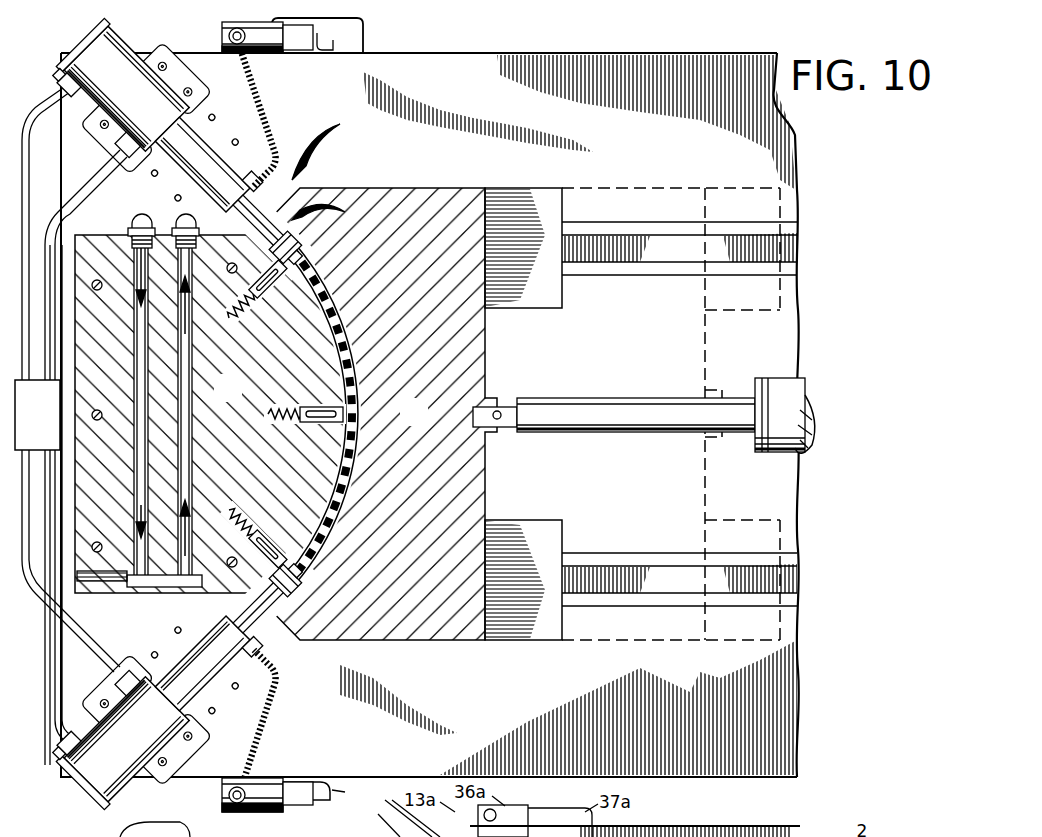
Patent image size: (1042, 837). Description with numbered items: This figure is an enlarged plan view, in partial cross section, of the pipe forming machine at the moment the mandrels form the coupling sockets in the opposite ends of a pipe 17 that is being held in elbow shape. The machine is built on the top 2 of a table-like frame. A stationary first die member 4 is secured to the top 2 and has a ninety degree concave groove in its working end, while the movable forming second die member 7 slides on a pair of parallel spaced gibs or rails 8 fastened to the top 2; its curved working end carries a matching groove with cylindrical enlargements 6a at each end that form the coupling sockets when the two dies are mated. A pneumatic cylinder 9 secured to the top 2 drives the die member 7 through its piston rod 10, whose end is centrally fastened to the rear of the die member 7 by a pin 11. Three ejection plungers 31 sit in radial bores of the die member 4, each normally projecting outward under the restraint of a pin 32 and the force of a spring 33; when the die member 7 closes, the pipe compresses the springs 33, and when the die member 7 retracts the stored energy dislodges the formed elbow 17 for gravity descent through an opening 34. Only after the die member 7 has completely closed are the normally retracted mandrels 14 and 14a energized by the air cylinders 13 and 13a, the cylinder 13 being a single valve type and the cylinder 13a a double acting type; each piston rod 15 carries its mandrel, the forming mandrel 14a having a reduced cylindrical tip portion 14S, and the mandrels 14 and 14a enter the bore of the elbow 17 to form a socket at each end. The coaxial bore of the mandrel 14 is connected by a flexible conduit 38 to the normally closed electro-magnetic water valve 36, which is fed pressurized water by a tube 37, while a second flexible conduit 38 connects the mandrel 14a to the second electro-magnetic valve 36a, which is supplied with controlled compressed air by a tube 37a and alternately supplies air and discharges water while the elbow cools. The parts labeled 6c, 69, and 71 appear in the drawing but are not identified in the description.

The top 2 is at (536, 114).
The stationary first die member 4 is at (218, 397).
The cylindrical enlargements 6a is at (258, 302).
The latch position indicator 6c is at (346, 213).
The movable forming second die member 7 is at (404, 421).
The gibs or rails 8 is at (632, 265).
The pneumatic cylinder 9 is at (768, 452).
The piston rod 10 is at (622, 432).
The pin 11 is at (500, 412).
The air cylinder 13 is at (95, 800).
The air cylinder 13a is at (95, 48).
The mandrel 14 is at (235, 626).
The forming mandrel 14a is at (240, 212).
The reduced cylindrical tip portion 14S is at (306, 250).
The piston rod 15 is at (203, 140).
The pipe 17 is at (340, 360).
The ejection plunger 31 is at (285, 283).
The pin 32 is at (280, 300).
The spring 33 is at (240, 315).
The opening 34 is at (338, 126).
The electro-magnetic normally closed single water valve 36 is at (270, 812).
The second electro-magnetic valve 36a is at (222, 34).
The water tube 37 is at (345, 792).
The tube 37a is at (365, 40).
The flexible conduit 38 is at (268, 88).
The supply tube 69 is at (62, 100).
The return tube 71 is at (90, 180).